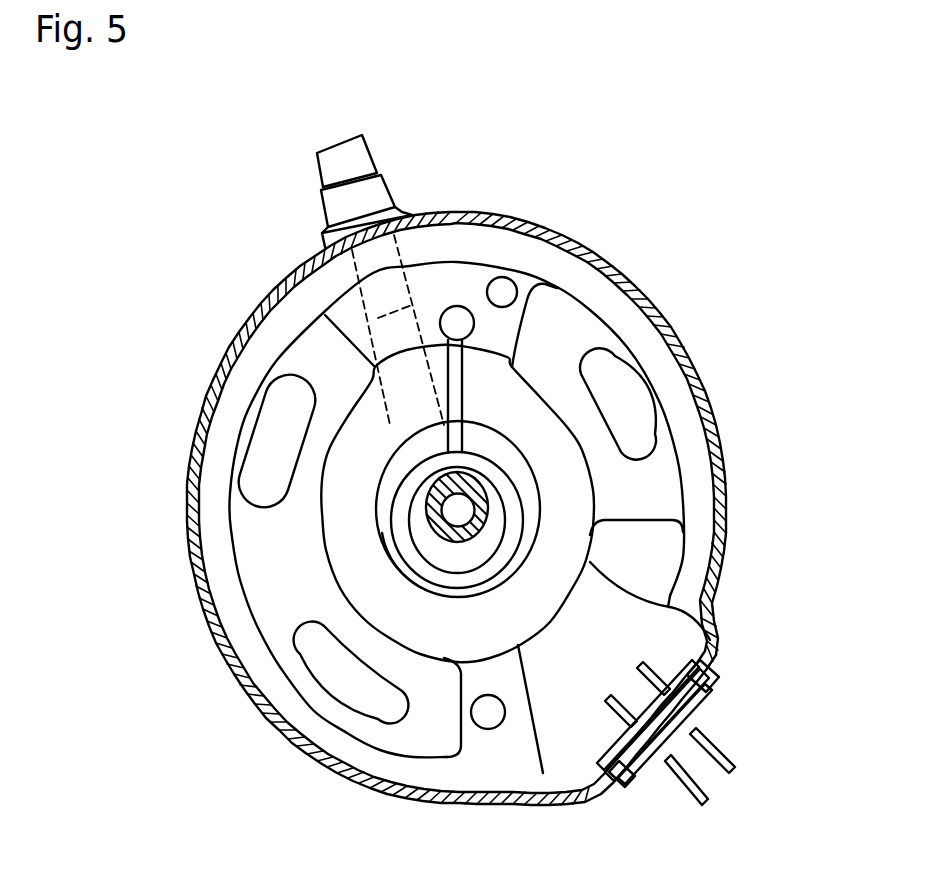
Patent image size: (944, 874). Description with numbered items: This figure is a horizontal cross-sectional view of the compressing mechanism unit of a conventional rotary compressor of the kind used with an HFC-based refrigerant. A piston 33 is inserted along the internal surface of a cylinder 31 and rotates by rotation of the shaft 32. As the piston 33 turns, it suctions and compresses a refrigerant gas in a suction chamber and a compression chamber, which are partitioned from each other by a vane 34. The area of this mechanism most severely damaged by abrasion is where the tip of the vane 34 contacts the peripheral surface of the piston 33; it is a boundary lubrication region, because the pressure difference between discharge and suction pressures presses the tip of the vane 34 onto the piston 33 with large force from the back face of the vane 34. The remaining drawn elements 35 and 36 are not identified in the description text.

The cylinder 31 is at (337, 503).
The shaft 32 is at (433, 520).
The piston 33 is at (514, 508).
The vane 34 is at (452, 352).
The bearing holder 35 is at (417, 467).
The hub ring 36 is at (503, 428).